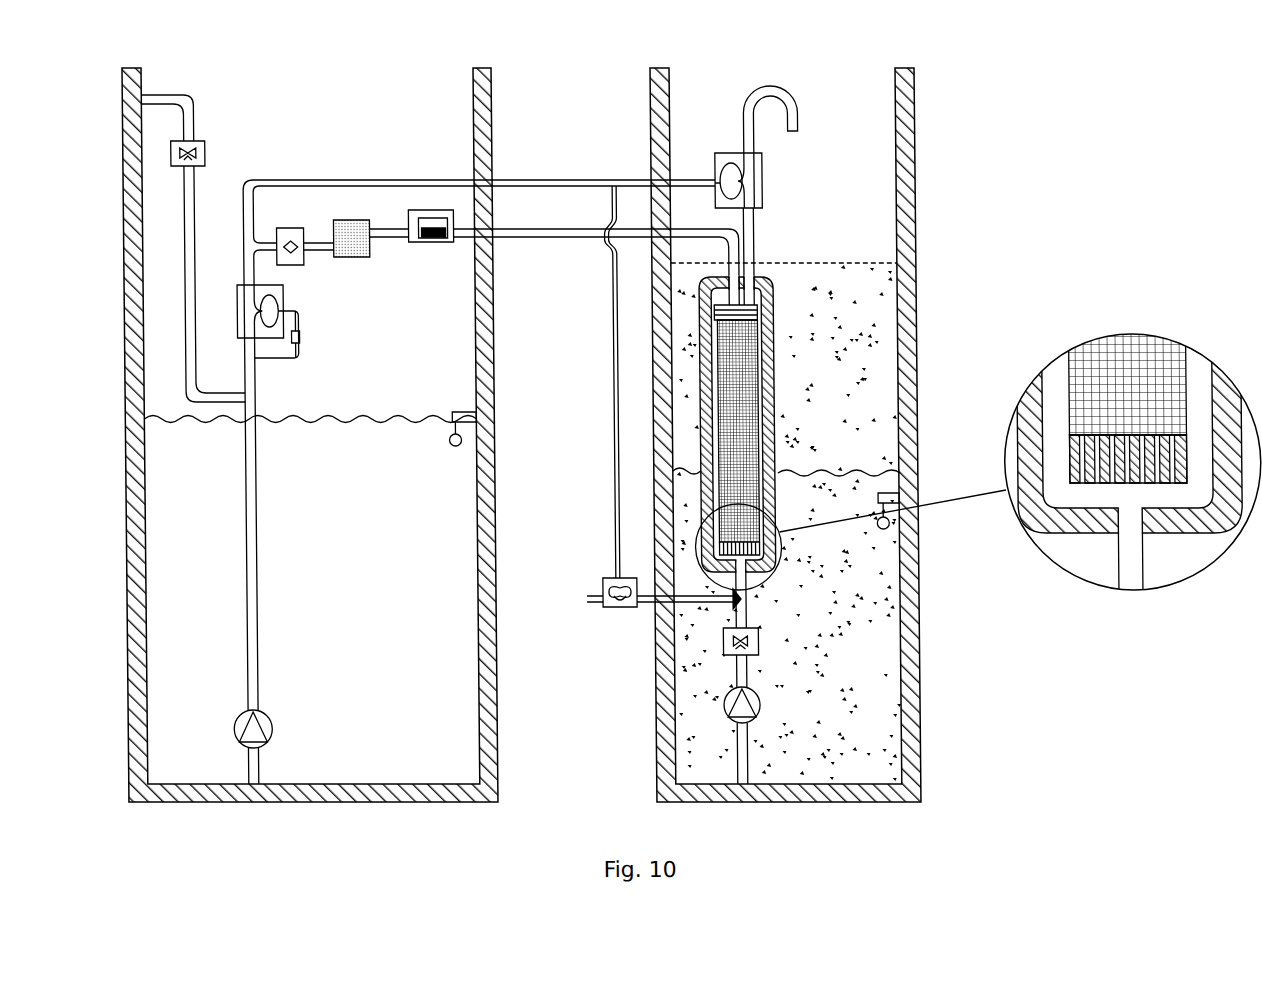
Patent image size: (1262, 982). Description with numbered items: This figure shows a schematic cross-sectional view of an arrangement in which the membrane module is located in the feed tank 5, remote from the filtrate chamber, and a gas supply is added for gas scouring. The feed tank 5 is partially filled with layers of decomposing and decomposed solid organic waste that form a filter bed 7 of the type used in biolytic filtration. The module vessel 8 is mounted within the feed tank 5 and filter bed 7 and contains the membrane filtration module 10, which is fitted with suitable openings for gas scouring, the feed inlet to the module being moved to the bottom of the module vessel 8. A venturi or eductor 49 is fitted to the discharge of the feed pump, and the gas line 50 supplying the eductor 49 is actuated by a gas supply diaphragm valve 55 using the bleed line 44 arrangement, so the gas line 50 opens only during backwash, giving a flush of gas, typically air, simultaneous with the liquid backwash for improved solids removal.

The feed tank 5 is at (906, 260).
The filter bed 7 is at (131, 360).
The module vessel 8 is at (700, 460).
The membrane filtration module 10 is at (717, 402).
The bleed line 44 is at (536, 180).
The eductor 49 is at (734, 601).
The gas line 50 is at (587, 606).
The gas supply diaphragm valve 55 is at (603, 578).